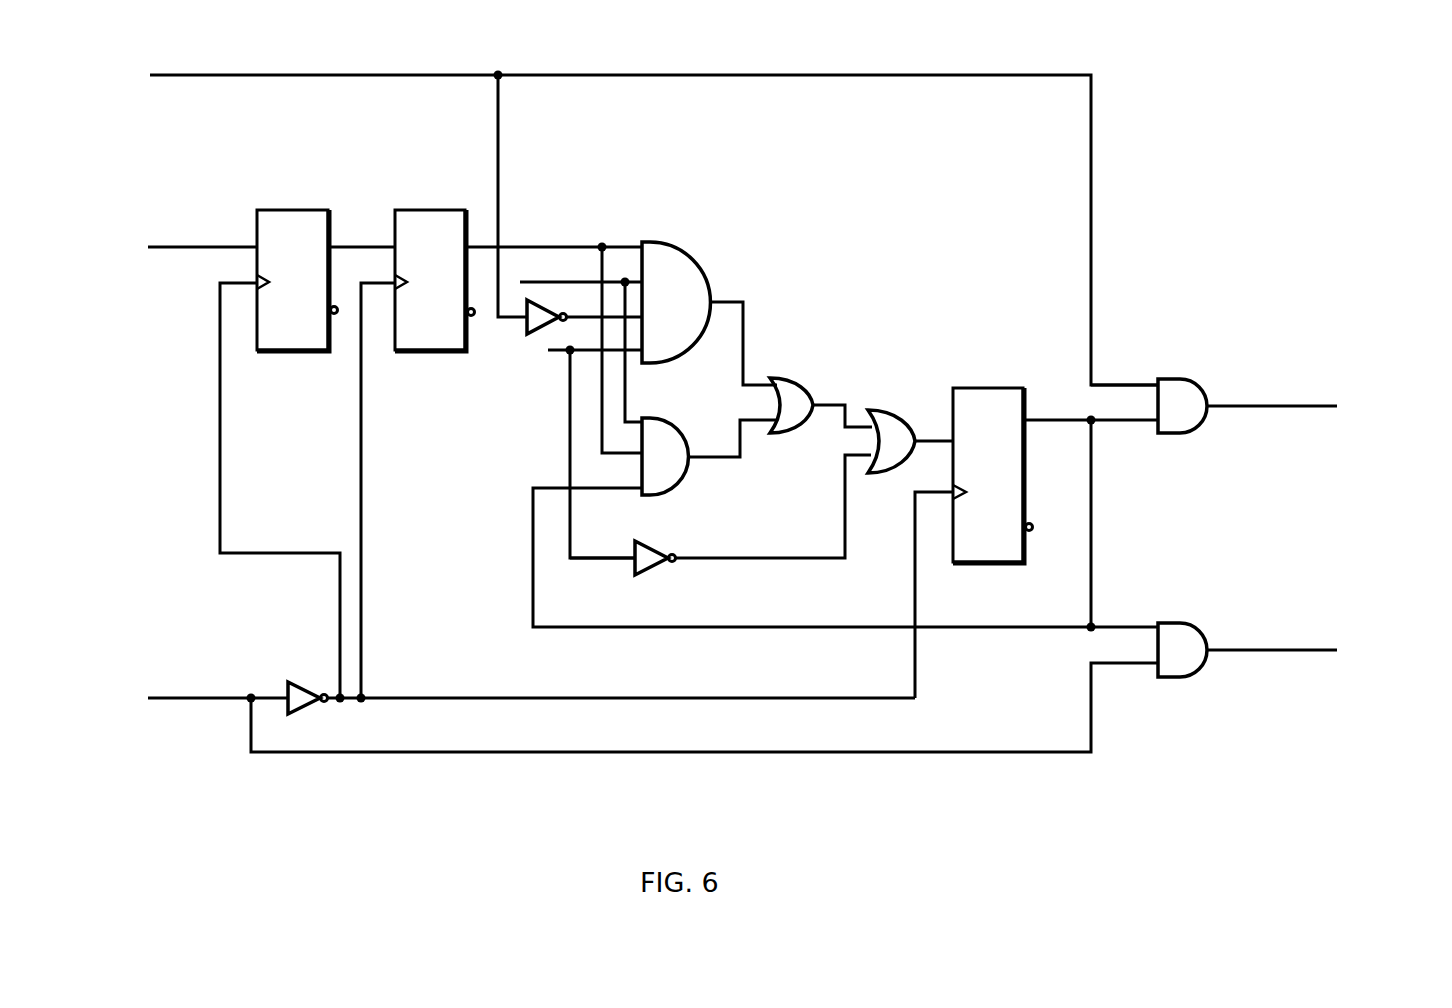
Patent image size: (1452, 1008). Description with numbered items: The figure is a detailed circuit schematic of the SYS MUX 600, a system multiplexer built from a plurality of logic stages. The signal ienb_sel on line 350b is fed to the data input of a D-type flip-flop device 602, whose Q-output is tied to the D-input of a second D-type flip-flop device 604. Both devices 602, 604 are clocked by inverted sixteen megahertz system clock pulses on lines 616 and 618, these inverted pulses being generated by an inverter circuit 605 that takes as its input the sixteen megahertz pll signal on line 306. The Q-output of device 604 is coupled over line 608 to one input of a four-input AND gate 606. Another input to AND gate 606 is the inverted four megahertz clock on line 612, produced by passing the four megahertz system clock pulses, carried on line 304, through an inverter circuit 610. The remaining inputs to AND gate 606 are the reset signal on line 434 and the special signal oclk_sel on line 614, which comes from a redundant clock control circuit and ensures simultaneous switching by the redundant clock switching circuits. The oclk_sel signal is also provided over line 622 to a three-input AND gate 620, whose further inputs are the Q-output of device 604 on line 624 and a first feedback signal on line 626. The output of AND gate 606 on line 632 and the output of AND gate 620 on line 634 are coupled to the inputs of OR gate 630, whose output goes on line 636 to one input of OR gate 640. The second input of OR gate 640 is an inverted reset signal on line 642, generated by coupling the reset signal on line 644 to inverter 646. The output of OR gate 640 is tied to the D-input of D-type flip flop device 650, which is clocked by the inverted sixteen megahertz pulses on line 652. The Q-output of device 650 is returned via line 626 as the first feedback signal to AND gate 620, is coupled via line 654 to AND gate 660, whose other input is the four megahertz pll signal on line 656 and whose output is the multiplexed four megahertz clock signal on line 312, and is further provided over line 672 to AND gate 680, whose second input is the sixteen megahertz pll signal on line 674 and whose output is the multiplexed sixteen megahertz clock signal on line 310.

The SYS MUX 600 is at (1316, 101).
The pll_4 signal line 304 is at (168, 77).
The pll_16 signal line 306 is at (168, 700).
The mpll_16 clock signal line 310 is at (1240, 649).
The mpll_4 signal line 312 is at (1253, 406).
The ienb_sel signal line 350b is at (205, 262).
The reset signal line 434 is at (562, 356).
The D-type flip-flop device 602 is at (278, 212).
The D-type flip-flop device 604 is at (396, 210).
The inverter circuit 605 is at (326, 660).
The 4-input AND gate 606 is at (662, 242).
The line 608 is at (572, 211).
The inverter circuit 610 is at (525, 312).
The line 612 is at (598, 311).
The oclk_sel signal line 614 is at (604, 247).
The clock line 616 is at (222, 444).
The clock line 618 is at (363, 444).
The 3-input AND gate 620 is at (665, 420).
The line 622 is at (627, 372).
The line 624 is at (600, 433).
The first feedback signal line 626 is at (533, 572).
The OR gate 630 is at (772, 378).
The line 632 is at (738, 302).
The line 634 is at (734, 455).
The line 636 is at (818, 400).
The OR gate 640 is at (875, 416).
The inverted reset signal line 642 is at (776, 560).
The reset signal line 644 is at (598, 560).
The inverter 646 is at (664, 540).
The D-type flip flop device 650 is at (970, 388).
The clock line 652 is at (918, 580).
The line 654 is at (1118, 424).
The pll_4 input line 656 is at (1110, 384).
The AND gate 660 is at (1196, 380).
The line 672 is at (1106, 626).
The pll_16 input line 674 is at (1122, 665).
The AND gate 680 is at (1182, 624).